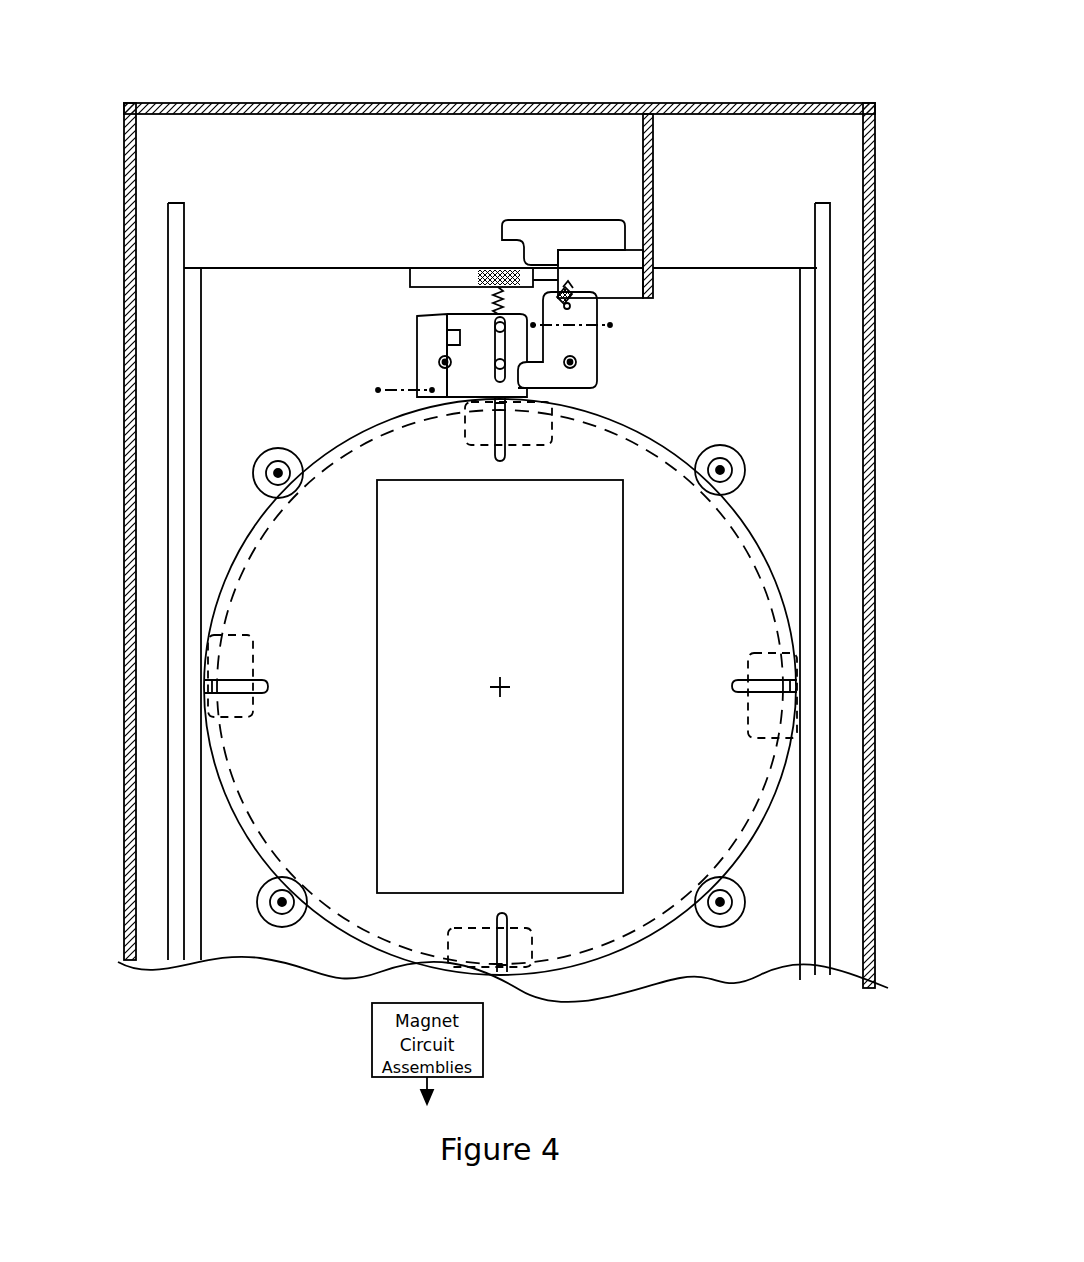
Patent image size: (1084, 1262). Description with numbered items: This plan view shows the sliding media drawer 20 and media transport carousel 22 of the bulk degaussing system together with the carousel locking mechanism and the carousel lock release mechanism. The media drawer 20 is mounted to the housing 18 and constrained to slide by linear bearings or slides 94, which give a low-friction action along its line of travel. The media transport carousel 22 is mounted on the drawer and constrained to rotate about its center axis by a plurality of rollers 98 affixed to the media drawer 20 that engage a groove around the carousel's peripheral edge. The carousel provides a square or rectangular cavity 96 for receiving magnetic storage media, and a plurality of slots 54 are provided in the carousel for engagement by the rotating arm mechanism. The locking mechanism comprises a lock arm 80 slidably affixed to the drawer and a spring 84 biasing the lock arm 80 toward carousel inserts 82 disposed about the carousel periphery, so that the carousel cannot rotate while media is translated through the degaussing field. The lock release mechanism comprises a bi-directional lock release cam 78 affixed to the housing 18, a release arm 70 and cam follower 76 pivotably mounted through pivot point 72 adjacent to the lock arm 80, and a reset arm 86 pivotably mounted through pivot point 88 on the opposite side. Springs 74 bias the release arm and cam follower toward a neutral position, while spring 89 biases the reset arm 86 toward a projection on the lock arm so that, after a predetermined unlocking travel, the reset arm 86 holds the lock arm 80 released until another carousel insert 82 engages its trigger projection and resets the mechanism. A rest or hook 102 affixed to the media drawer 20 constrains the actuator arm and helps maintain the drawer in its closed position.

The housing 18 is at (417, 107).
The media drawer 20 is at (222, 530).
The media transport carousel 22 is at (277, 574).
The slots 54 is at (500, 455).
The release arm 70 is at (586, 375).
The pivot point 72 is at (576, 365).
The springs 74 is at (610, 325).
The cam follower 76 is at (572, 300).
The lock release cam 78 is at (599, 270).
The lock arm 80 is at (492, 298).
The carousel inserts 82 is at (540, 421).
The spring 84 is at (410, 284).
The reset arm 86 is at (428, 341).
The pivot point 88 is at (445, 362).
The spring 89 is at (400, 390).
The linear bearings or slides 94 is at (182, 930).
The cavity 96 is at (407, 770).
The rollers 98 is at (270, 474).
The rest or hook 102 is at (552, 228).